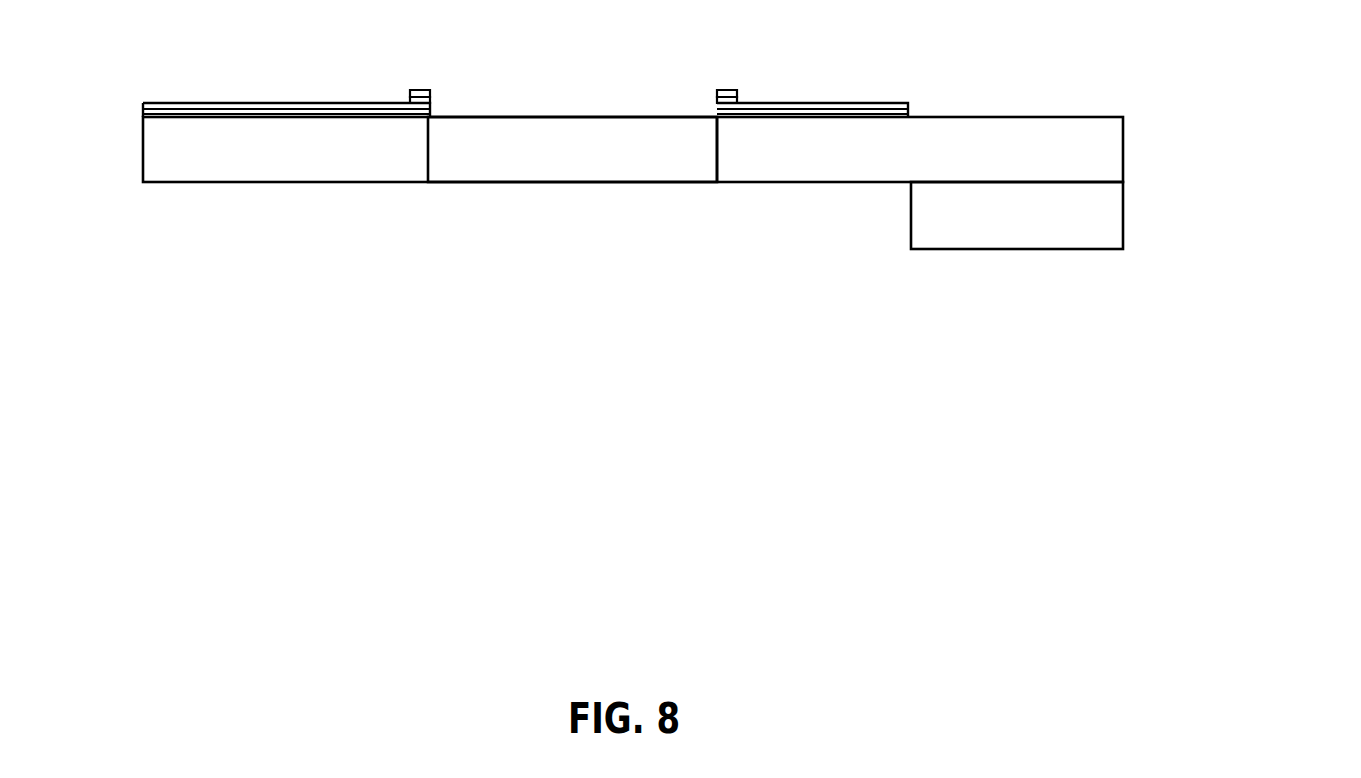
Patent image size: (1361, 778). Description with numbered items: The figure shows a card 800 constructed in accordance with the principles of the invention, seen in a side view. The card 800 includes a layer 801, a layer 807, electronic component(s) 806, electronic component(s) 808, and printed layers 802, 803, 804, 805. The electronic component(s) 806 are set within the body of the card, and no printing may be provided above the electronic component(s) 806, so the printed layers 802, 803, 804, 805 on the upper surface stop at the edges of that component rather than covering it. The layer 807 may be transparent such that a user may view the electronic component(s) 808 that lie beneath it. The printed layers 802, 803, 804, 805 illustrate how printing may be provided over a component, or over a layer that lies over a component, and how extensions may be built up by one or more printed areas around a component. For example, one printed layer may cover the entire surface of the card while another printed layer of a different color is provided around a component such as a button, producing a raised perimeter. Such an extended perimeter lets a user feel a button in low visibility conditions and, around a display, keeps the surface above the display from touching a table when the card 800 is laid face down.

The card 800 is at (1301, 135).
The layer 801 is at (146, 150).
The printed layer 802 is at (143, 113).
The printed layer 803 is at (258, 103).
The printed layer 804 is at (412, 101).
The printed layer 805 is at (412, 91).
The electronic component 806 is at (462, 183).
The layer 807 is at (765, 183).
The electronic component 808 is at (911, 216).